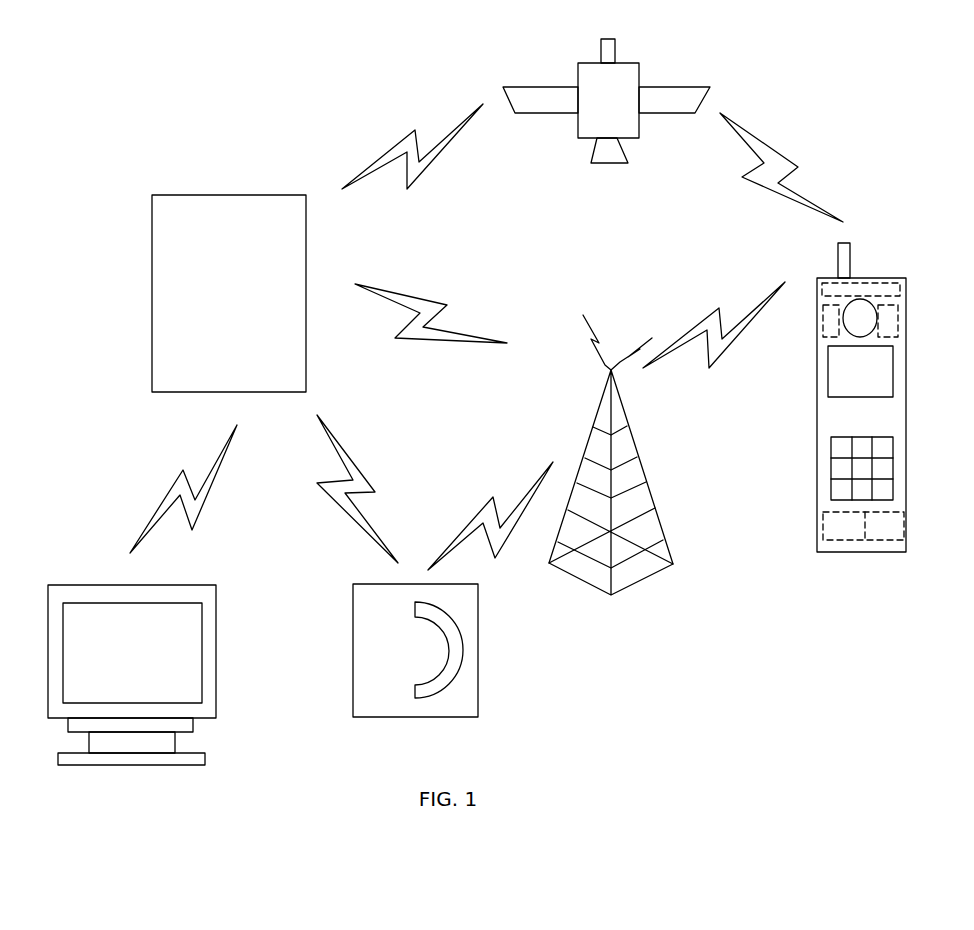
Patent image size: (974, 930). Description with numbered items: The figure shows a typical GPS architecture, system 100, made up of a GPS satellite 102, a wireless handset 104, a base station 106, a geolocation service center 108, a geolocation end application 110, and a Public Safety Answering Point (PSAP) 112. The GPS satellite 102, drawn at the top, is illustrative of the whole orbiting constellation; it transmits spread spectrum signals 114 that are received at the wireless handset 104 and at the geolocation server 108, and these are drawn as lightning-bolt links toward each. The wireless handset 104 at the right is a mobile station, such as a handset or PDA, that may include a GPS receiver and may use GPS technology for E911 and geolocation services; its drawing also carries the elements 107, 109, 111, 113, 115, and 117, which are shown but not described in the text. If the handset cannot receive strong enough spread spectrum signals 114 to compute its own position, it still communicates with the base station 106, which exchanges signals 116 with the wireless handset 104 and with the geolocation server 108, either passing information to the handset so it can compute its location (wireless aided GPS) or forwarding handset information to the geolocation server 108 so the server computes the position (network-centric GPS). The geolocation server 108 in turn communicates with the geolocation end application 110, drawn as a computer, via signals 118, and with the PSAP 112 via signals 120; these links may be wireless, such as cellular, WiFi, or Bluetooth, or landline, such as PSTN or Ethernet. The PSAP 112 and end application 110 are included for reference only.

The system 100 is at (186, 80).
The GPS satellite 102 is at (593, 110).
The wireless handset 104 is at (848, 422).
The base station 106 is at (673, 548).
The first module in mobile device 107 is at (856, 536).
The geolocation service center 108 is at (214, 347).
The second receiver/antenna element of mobile device 109 is at (882, 284).
The geolocation end application 110 is at (117, 638).
The antenna/receiver element of mobile device 111 is at (850, 284).
The Public Safety Answering Point (PSAP) 112 is at (382, 675).
The left element of mobile device 113 is at (828, 336).
The spread spectrum signals 114 is at (396, 141).
The right element of mobile device 115 is at (895, 336).
The signals 116 is at (413, 296).
The second module in mobile device 117 is at (898, 536).
The signals 118 is at (167, 490).
The signals 120 is at (360, 467).